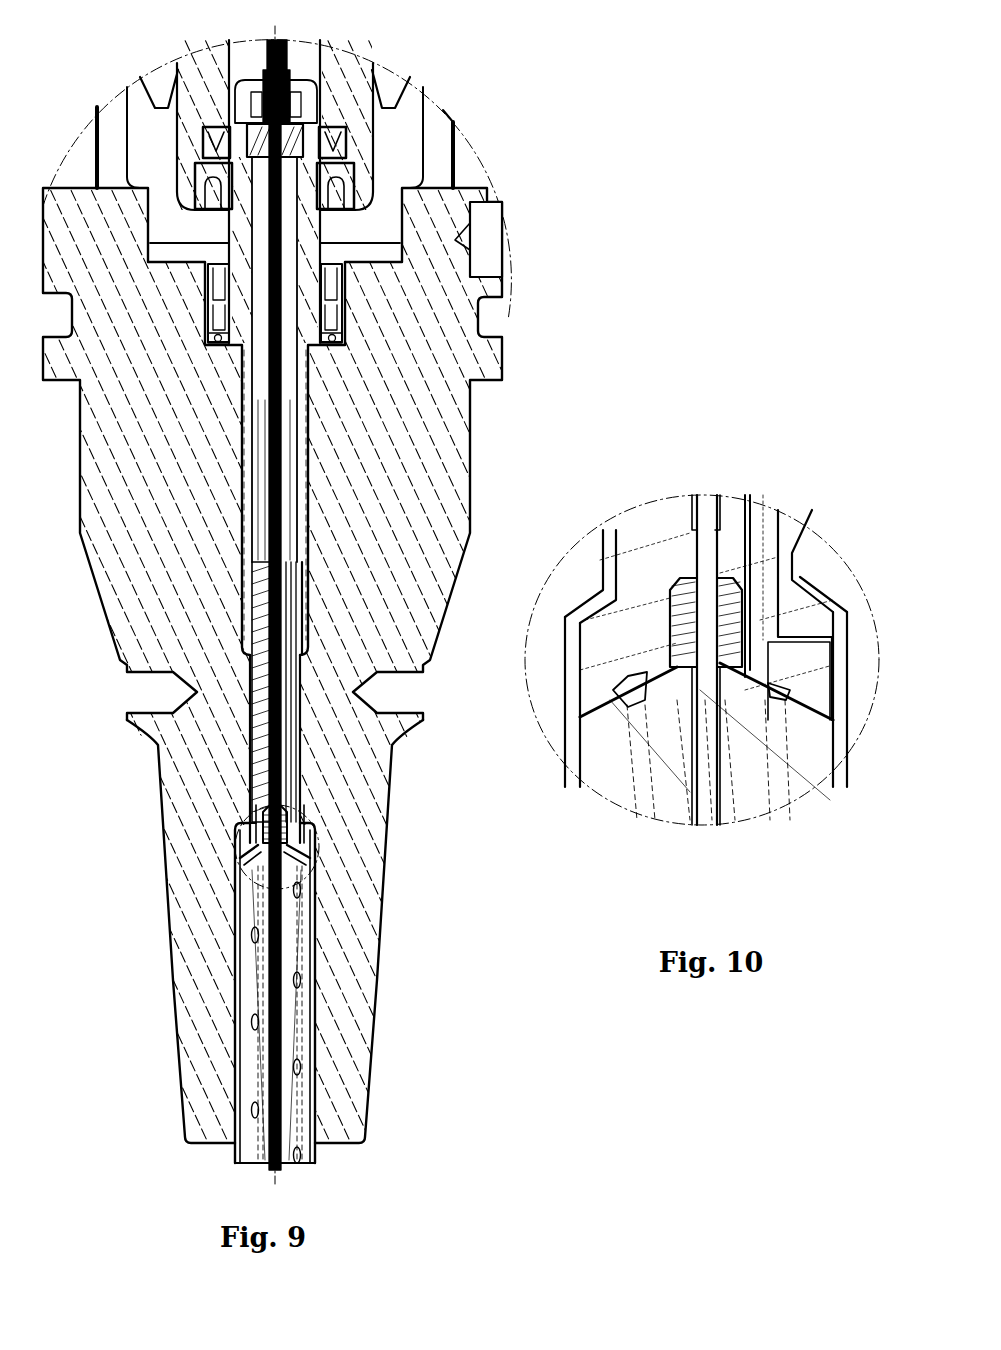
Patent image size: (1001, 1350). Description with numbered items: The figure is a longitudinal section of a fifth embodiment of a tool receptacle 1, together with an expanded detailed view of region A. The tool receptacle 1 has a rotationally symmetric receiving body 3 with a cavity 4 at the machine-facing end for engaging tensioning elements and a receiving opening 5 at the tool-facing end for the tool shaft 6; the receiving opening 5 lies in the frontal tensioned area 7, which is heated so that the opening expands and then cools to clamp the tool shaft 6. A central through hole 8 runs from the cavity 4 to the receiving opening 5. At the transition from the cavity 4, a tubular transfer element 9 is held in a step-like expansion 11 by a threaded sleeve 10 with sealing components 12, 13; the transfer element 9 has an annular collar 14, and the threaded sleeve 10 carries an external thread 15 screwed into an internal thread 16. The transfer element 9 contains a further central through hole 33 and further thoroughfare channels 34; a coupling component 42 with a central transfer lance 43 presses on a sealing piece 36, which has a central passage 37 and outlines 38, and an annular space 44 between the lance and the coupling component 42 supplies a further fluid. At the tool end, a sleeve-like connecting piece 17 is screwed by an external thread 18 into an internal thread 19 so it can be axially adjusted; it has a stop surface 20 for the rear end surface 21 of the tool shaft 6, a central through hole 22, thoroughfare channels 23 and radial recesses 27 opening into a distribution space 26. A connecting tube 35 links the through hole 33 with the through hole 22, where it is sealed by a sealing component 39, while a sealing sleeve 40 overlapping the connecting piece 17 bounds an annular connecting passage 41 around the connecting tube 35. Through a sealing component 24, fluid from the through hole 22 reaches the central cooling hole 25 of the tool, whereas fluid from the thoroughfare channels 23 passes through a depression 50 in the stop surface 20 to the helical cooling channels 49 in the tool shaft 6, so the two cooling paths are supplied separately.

In FIG. 9, the tool receptacle 1 is at (524, 170).
In FIG. 9, the receiving body 3 is at (428, 448).
In FIG. 9, the cavity 4 is at (148, 127).
In FIG. 9, the receiving opening 5 is at (255, 990).
In FIG. 9, the tool shaft 6 is at (247, 1082).
In FIG. 9, the frontal tensioned area 7 is at (353, 1010).
In FIG. 9, the central through hole 8 is at (300, 510).
In FIG. 9, the tubular transfer element 9 is at (360, 190).
In FIG. 9, the threaded sleeve 10 is at (345, 290).
In FIG. 9, the step-like expansion 11 is at (345, 338).
In FIG. 9, the sealing component 12 is at (212, 302).
In FIG. 9, the sealing component 13 is at (207, 347).
In FIG. 9, the annular collar 14 is at (217, 318).
In FIG. 9, the external thread 15 is at (345, 310).
In FIG. 9, the internal thread 16 is at (217, 267).
In FIG. 9, the sleeve-like connecting piece 17 is at (330, 733).
In FIG. 10, the sleeve-like connecting piece 17 is at (665, 533).
In FIG. 9, the external thread 18 is at (300, 677).
In FIG. 9, the internal thread 19 is at (313, 745).
In FIG. 9, the stop surface 20 is at (237, 873).
In FIG. 10, the stop surface 20 is at (800, 713).
In FIG. 9, the rear end surface 21 is at (247, 832).
In FIG. 9, the central through hole 22 is at (292, 838).
In FIG. 10, the central through hole 22 is at (705, 540).
In FIG. 9, the thoroughfare channels 23 is at (247, 655).
In FIG. 10, the thoroughfare channels 23 is at (758, 540).
In FIG. 9, the sealing component 24 is at (288, 826).
In FIG. 10, the sealing component 24 is at (687, 600).
In FIG. 9, the central cooling hole 25 is at (290, 940).
In FIG. 10, the central cooling hole 25 is at (705, 812).
In FIG. 9, the distribution space 26 is at (317, 868).
In FIG. 9, the radial recesses 27 is at (313, 842).
In FIG. 9, the further central through hole 33 is at (287, 253).
In FIG. 9, the further thoroughfare channels 34 is at (340, 148).
In FIG. 9, the connecting tube 35 is at (270, 480).
In FIG. 9, the sealing piece 36 is at (317, 133).
In FIG. 9, the central passage 37 is at (250, 127).
In FIG. 9, the outlines 38 is at (302, 133).
In FIG. 9, the sealing component 39 is at (268, 568).
In FIG. 9, the sealing sleeve 40 is at (300, 408).
In FIG. 9, the connecting passage 41 is at (263, 527).
In FIG. 9, the coupling component 42 is at (212, 60).
In FIG. 9, the central transfer lance 43 is at (292, 55).
In FIG. 9, the annular space 44 is at (252, 77).
In FIG. 9, the cooling channels 49 is at (293, 913).
In FIG. 10, the cooling channels 49 is at (790, 790).
In FIG. 10, the depression 50 is at (782, 655).
In FIG. 9, the region A is at (228, 817).